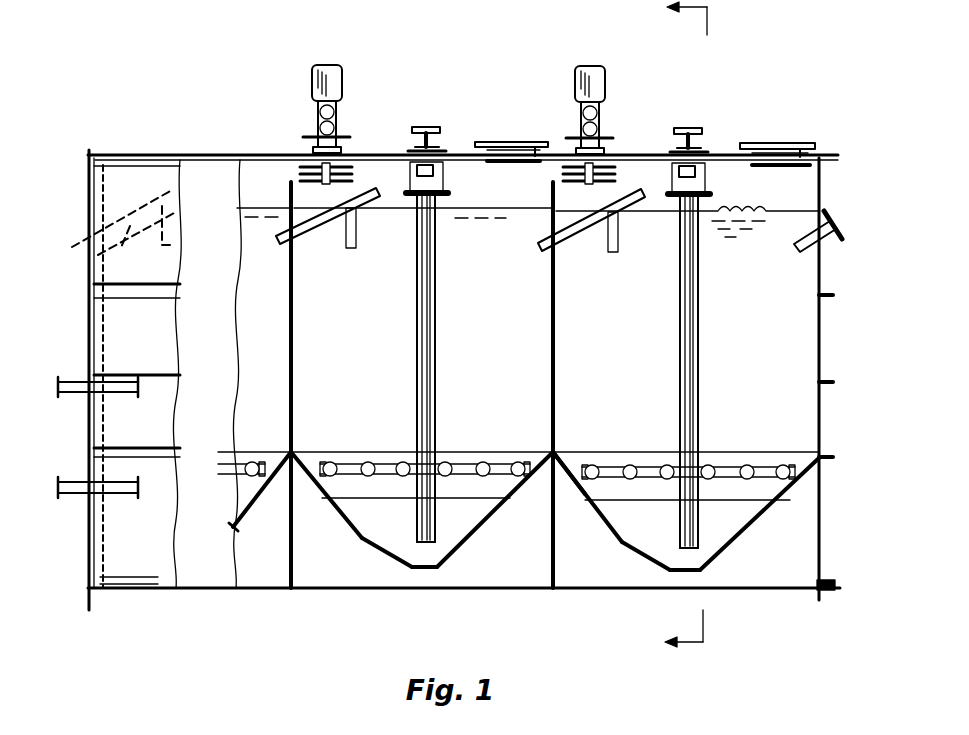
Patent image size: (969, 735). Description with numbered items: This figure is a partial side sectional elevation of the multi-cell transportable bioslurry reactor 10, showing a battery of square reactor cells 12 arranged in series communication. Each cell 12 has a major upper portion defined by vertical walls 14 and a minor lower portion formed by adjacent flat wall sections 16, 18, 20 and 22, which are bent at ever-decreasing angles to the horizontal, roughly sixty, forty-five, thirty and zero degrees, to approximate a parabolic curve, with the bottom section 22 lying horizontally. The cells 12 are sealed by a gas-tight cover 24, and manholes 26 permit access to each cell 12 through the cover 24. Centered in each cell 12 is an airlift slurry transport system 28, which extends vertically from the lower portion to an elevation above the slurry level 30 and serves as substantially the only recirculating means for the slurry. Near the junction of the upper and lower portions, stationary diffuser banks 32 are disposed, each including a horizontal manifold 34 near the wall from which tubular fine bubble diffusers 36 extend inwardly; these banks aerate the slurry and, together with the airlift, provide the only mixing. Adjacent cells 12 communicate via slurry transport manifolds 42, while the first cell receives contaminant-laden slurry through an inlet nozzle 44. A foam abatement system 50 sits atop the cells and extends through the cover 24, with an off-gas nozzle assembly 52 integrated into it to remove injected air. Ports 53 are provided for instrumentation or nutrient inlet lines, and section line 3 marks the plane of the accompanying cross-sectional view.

The section line 3- 3 is at (674, 327).
The multi-cell transportable bioslurry reactor 10 is at (754, 120).
The reactor cell 12 is at (131, 183).
The vertical wall 14 is at (293, 330).
The flat wall section 16 is at (281, 500).
The flat wall section 18 is at (340, 522).
The flat wall section 20 is at (380, 558).
The flat wall section 22 is at (430, 570).
The gas-tight cover 24 is at (463, 155).
The manhole 26 is at (783, 148).
The airlift slurry transport system 28 is at (455, 319).
The slurry level 30 is at (471, 206).
The diffuser bank 32 is at (477, 452).
The manifold 34 is at (348, 464).
The tubular fine bubble diffuser 36 is at (404, 463).
The slurry transport manifold 42 is at (124, 250).
The inlet nozzle 44 is at (826, 238).
The foam abatement system 50 is at (356, 64).
The off-gas nozzle assembly 52 is at (457, 142).
The instrumentation port 53 is at (398, 150).